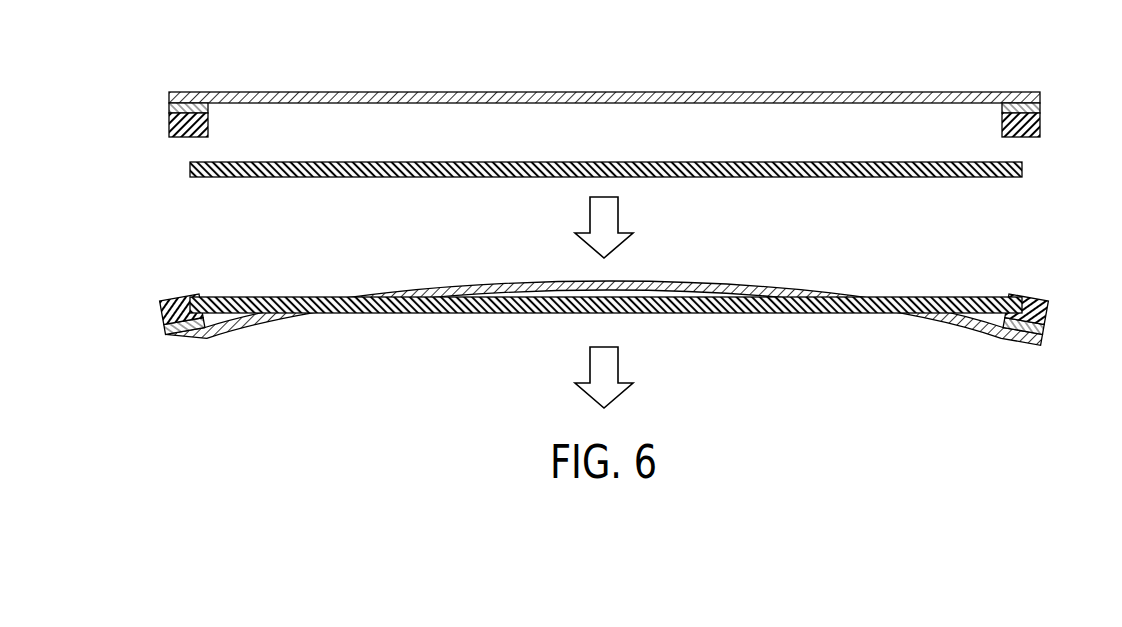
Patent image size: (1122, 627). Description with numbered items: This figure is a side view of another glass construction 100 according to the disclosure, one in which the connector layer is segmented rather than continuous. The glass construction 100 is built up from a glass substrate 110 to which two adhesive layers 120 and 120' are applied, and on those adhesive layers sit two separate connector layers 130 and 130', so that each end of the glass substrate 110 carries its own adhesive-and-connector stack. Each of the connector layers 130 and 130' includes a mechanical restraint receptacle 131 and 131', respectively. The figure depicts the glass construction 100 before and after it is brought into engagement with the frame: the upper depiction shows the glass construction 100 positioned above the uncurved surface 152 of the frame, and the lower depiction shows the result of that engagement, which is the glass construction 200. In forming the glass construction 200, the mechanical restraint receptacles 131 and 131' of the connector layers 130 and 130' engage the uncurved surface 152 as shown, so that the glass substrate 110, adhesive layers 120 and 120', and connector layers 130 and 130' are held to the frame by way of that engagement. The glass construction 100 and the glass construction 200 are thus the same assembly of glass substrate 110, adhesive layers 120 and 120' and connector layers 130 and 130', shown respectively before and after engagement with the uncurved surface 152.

The glass construction 100 is at (915, 73).
The glass substrate 110 is at (180, 92).
The adhesive layer 120 is at (1052, 203).
The adhesive layer 120' is at (150, 234).
The connector layer 130 is at (1057, 255).
The connector layer 130' is at (176, 257).
The mechanical restraint receptacle 131 is at (1008, 206).
The mechanical restraint receptacle 131' is at (200, 207).
The uncurved surface 152 is at (1022, 174).
The glass construction 200 is at (940, 275).